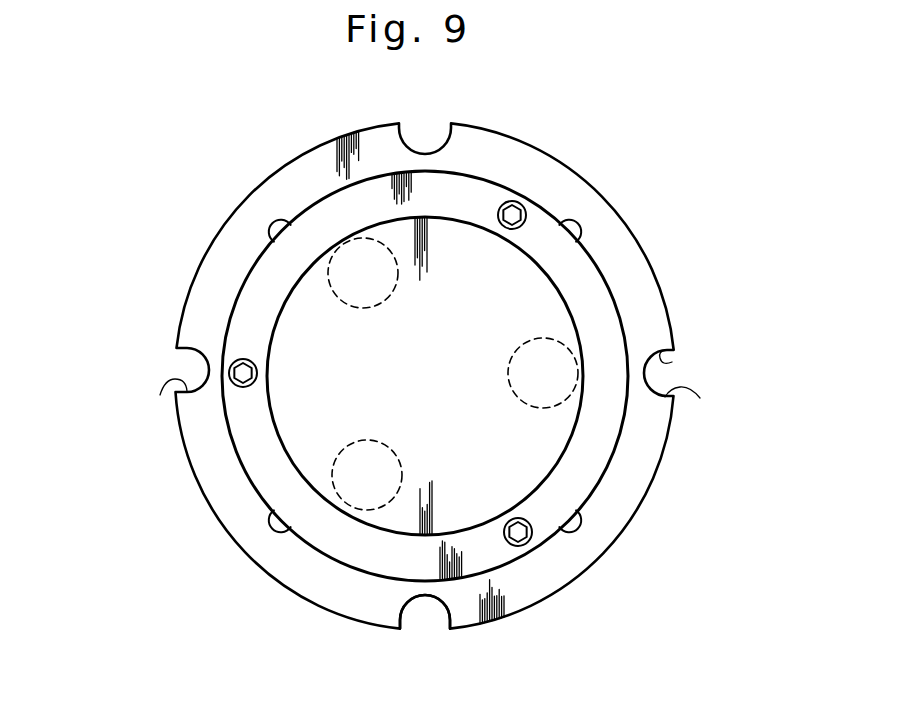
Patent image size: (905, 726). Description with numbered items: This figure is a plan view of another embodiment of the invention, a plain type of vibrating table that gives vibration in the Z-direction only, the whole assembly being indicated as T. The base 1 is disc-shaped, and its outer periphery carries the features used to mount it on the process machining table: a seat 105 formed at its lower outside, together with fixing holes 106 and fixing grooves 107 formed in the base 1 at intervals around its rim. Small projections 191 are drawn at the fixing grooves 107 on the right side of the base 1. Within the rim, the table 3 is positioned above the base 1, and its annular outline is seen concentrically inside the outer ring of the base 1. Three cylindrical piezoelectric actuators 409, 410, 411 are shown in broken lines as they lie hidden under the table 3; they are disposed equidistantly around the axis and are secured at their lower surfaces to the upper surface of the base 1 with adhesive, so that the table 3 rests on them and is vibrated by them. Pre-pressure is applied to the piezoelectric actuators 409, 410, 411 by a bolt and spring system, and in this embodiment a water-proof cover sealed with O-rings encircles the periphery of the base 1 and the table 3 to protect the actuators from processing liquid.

The base 1 is at (655, 297).
The table 3 is at (593, 480).
The seat 105 is at (372, 604).
The fixing holes 106 is at (577, 226).
The fixing grooves 107 is at (160, 395).
The projection 191 is at (672, 362).
The cylindrical piezoelectric actuator 409 is at (350, 243).
The cylindrical piezoelectric actuator 410 is at (348, 488).
The cylindrical piezoelectric actuator 411 is at (560, 382).
The tool T is at (177, 290).